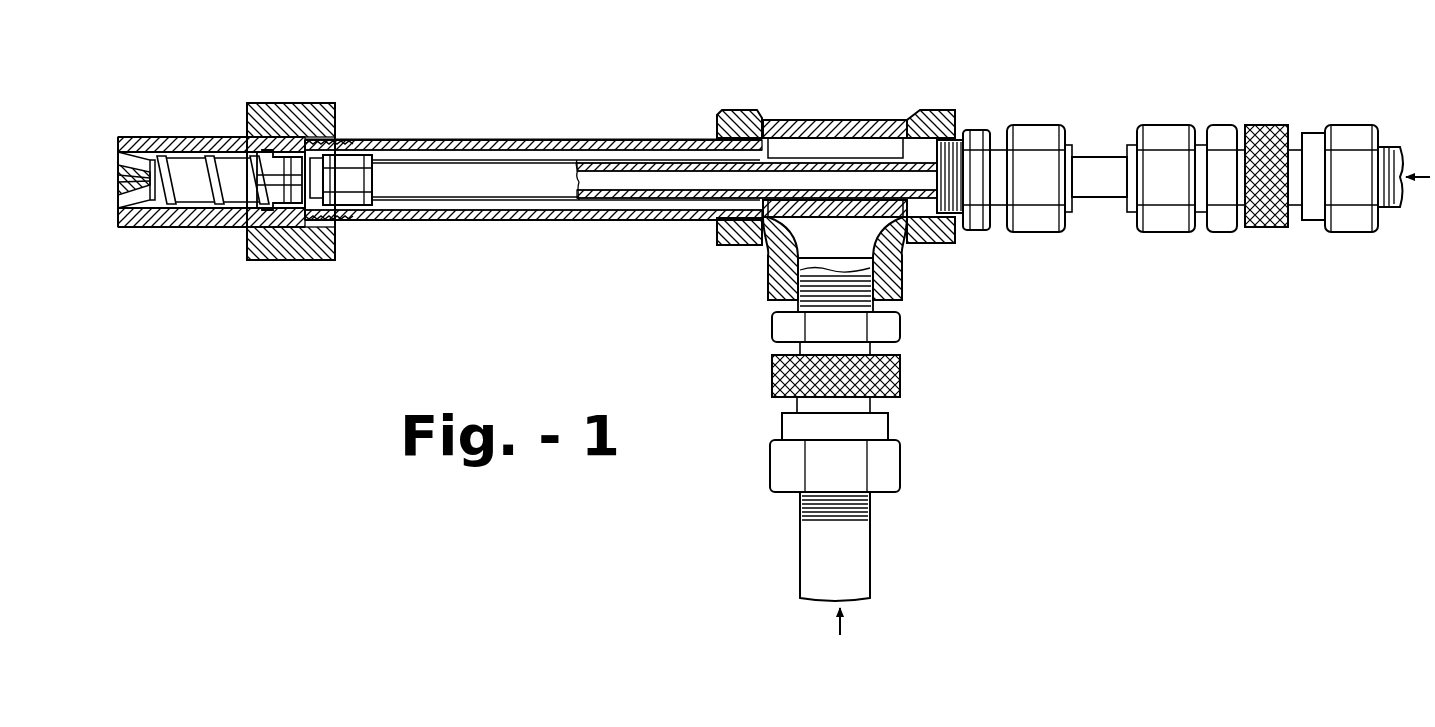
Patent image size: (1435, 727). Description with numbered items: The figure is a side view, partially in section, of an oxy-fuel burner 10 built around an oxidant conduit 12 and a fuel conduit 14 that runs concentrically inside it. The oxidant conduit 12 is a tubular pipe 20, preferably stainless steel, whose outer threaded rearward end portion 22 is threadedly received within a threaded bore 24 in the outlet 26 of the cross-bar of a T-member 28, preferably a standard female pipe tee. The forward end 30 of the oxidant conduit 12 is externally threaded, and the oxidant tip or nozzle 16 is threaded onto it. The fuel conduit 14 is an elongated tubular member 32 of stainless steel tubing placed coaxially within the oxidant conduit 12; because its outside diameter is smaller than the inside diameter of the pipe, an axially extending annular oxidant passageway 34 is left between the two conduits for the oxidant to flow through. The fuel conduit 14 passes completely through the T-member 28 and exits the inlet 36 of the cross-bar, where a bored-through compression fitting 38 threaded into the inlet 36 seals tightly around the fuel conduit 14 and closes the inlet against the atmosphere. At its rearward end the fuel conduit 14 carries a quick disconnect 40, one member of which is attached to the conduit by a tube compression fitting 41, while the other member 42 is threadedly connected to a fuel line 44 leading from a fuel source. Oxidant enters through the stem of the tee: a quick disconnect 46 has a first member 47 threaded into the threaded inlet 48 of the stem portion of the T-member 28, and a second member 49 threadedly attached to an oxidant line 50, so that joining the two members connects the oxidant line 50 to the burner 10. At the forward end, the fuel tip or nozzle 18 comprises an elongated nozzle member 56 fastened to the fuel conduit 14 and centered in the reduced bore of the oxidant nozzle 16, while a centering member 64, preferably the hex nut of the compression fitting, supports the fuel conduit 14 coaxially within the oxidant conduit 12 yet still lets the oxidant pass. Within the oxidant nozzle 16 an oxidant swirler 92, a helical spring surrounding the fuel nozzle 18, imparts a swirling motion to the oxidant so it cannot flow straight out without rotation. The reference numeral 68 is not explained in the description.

The oxy-fuel burner 10 is at (740, 298).
The oxidant conduit 12 is at (623, 142).
The fuel conduit 14 is at (543, 188).
The oxidant tip or nozzle 16 is at (300, 103).
The fuel tip or nozzle 18 is at (237, 190).
The tubular pipe 20 is at (417, 147).
The outer threaded rearward end portion 22 is at (755, 112).
The threaded bore 24 is at (717, 120).
The outlet 26 is at (748, 240).
The T-member 28 is at (923, 247).
The forward end of the oxidant conduit 30 is at (338, 140).
The elongated tubular member 32 is at (468, 185).
The annular oxidant passageway 34 is at (425, 203).
The inlet 36 is at (930, 122).
The bored-through compression fitting 38 is at (1028, 163).
The quick disconnect 40 is at (1253, 118).
The tube compression fitting 41 is at (1173, 225).
The other member of the quick disconnect 42 is at (1353, 140).
The fuel line 44 is at (1390, 127).
The quick disconnect 46 is at (905, 380).
The first member 47 is at (787, 325).
The threaded inlet 48 is at (893, 273).
The second member 49 is at (848, 472).
The oxidant line 50 is at (848, 548).
The elongated nozzle member 56 is at (234, 172).
The centering member 64 is at (343, 190).
The nozzle body 68 is at (148, 227).
The oxidant swirler 92 is at (196, 148).